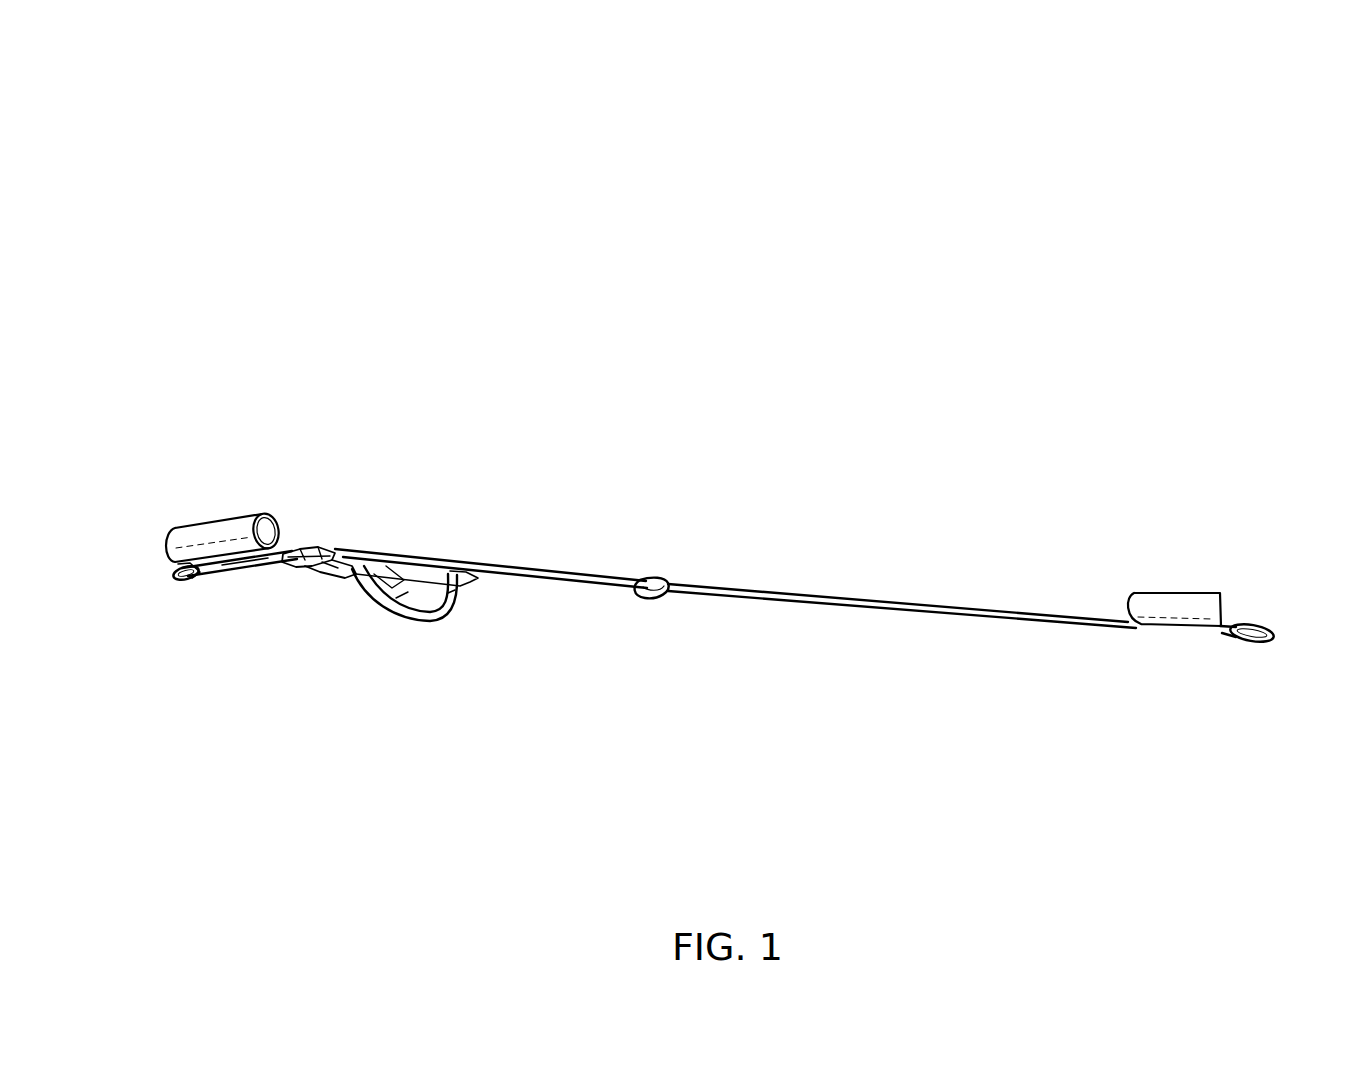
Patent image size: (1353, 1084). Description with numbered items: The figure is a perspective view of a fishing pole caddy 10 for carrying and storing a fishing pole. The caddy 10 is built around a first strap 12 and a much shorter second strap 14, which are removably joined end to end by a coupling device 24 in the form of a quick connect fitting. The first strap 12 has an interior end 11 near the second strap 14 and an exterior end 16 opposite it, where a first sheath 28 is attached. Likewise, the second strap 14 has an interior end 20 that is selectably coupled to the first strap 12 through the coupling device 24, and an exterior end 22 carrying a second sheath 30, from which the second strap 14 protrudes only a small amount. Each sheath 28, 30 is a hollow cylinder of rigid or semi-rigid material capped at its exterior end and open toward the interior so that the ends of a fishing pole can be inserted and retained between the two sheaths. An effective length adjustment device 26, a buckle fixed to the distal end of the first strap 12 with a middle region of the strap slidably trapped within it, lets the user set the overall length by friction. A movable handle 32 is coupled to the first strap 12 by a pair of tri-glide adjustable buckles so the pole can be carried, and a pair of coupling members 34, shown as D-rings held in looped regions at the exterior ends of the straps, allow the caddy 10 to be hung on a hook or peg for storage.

The fishing pole caddy 10 is at (1010, 128).
The interior end of the first strap 11 is at (405, 545).
The first strap 12 is at (900, 580).
The second strap 14 is at (218, 576).
The exterior end of the first strap 16 is at (1120, 584).
The interior end of the second strap 20 is at (264, 578).
The exterior end of the second strap 22 is at (182, 588).
The coupling device 24 is at (317, 532).
The effective length adjustment device 26 is at (667, 566).
The first sheath 28 is at (1229, 590).
The second sheath 30 is at (221, 524).
The movable handle 32 is at (432, 638).
The coupling members 34 is at (172, 572).